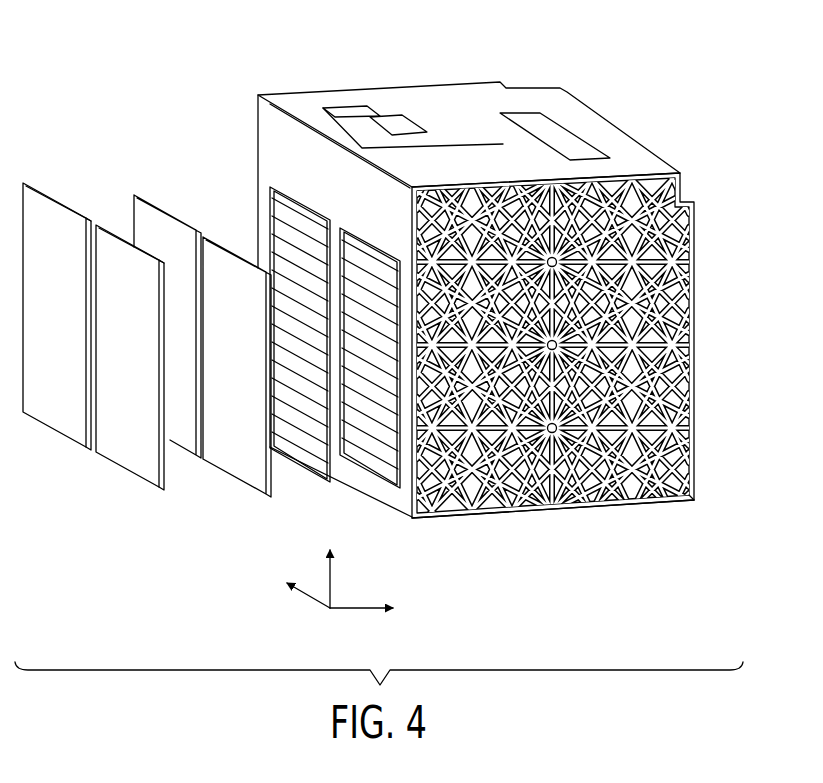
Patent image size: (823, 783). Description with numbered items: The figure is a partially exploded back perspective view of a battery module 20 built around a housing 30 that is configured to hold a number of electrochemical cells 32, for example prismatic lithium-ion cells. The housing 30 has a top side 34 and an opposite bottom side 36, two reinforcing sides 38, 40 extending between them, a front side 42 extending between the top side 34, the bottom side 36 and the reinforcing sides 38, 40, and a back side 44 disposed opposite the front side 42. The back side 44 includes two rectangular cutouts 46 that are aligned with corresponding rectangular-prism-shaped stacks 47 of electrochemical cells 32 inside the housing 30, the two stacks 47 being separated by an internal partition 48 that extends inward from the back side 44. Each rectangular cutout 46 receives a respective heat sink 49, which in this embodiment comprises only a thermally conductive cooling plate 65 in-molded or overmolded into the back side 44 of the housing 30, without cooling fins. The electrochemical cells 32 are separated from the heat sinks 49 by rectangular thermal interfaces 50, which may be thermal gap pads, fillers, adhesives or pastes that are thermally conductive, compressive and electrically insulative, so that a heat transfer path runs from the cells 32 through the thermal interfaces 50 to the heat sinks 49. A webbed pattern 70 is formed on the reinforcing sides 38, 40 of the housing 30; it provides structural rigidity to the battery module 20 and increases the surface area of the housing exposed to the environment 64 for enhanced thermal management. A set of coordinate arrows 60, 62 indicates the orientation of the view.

The battery module 20 is at (614, 50).
The housing 30 is at (658, 128).
The electrochemical cells 32 is at (378, 353).
The top side 34 is at (503, 144).
The bottom side 36 is at (518, 516).
The reinforcing side 38 is at (655, 478).
The reinforcing side 40 is at (258, 150).
The front side 42 is at (698, 293).
The back side 44 is at (334, 446).
The rectangular cutouts 46 is at (299, 280).
The stacks of electrochemical cells 47 is at (360, 293).
The internal partition 48 is at (352, 402).
The heat sinks 49 is at (92, 335).
The thermal interfaces 50 is at (221, 240).
The coordinate axes 60 is at (350, 608).
The axis 62 is at (313, 602).
The environment 64 is at (43, 492).
The thermally conductive cooling plate 65 is at (112, 446).
The webbed pattern 70 is at (606, 472).